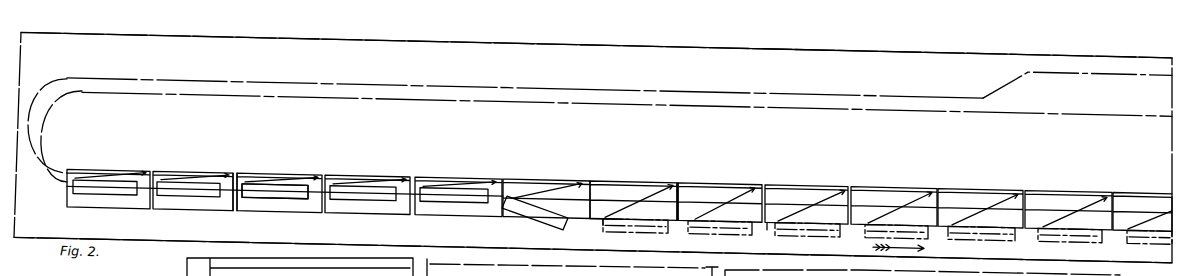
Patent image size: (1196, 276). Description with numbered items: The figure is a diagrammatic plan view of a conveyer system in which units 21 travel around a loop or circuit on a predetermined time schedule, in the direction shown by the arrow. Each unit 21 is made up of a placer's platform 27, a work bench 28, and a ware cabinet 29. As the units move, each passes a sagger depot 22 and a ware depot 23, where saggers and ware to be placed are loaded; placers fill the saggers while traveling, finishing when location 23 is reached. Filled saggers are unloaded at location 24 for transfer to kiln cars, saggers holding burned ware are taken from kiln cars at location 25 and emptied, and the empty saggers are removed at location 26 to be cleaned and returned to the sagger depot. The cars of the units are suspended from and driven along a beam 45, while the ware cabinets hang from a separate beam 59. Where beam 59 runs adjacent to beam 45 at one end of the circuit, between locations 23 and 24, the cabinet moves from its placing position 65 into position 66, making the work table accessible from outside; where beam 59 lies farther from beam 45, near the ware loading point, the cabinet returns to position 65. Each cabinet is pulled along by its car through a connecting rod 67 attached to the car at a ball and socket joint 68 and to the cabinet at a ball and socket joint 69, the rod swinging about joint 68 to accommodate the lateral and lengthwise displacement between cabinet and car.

The units 21 is at (830, 159).
The sagger depot 22 is at (448, 230).
The ware depot 23 is at (1049, 77).
The unloading location 24 is at (886, 57).
The burned ware unloading location 25 is at (626, 52).
The empty sagger removal location 26 is at (59, 154).
The placer's platform 27 is at (778, 173).
The work bench 28 is at (768, 207).
The ware cabinet 29 is at (815, 214).
The beam 45 is at (950, 91).
The beam 59 is at (1004, 63).
The cabinet placing position 65 is at (978, 214).
The cabinet displaced position 66 is at (272, 186).
The connecting rod 67 is at (113, 165).
The ball and socket joint 68 is at (233, 168).
The ball and socket joint 69 is at (160, 172).